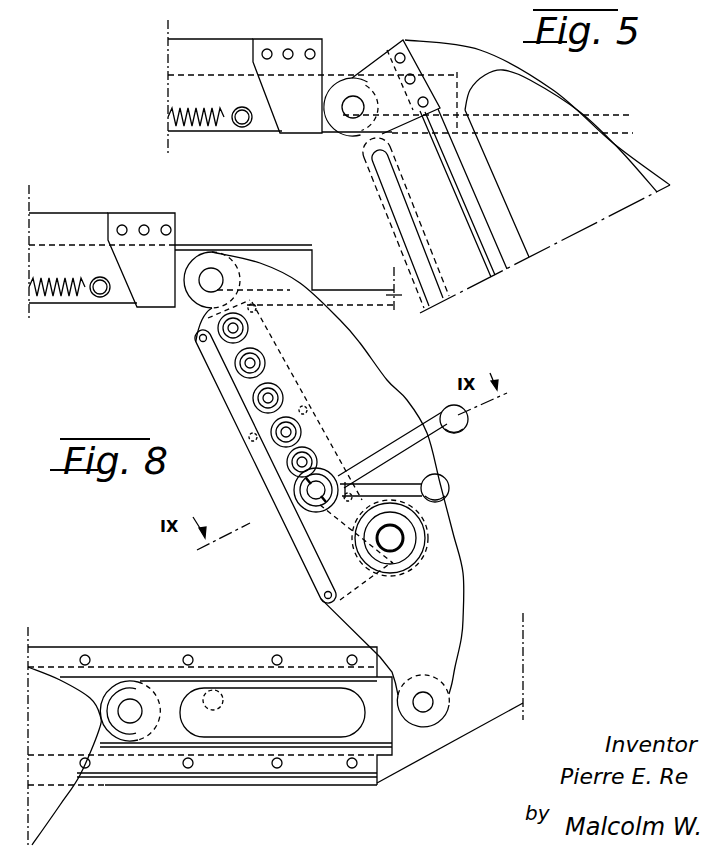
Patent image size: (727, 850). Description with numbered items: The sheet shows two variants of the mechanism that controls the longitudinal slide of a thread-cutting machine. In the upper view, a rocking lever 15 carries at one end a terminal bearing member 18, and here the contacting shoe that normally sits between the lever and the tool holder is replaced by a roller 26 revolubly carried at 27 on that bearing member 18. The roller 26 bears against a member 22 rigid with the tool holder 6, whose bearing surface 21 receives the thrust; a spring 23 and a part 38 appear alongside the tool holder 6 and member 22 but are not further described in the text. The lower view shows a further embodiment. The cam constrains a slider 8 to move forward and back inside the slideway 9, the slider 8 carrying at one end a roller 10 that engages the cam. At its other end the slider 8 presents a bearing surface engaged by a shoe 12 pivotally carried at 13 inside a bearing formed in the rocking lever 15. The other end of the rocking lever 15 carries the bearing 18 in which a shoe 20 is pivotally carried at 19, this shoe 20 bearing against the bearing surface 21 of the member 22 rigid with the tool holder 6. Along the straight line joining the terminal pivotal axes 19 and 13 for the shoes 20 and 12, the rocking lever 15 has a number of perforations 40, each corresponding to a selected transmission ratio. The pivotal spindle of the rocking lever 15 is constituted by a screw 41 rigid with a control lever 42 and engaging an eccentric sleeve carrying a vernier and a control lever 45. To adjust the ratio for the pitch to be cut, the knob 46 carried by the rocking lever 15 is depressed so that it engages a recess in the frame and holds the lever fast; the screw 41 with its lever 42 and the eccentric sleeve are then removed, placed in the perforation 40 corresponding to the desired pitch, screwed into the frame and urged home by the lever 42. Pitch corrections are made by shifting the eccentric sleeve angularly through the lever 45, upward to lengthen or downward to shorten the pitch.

In FIG. 5, the tool holder 6 is at (223, 53).
In FIG. 8, the tool holder 6 is at (45, 221).
In FIG. 8, the slider 8 is at (167, 730).
In FIG. 8, the slideway 9 is at (158, 657).
In FIG. 8, the roller 10 is at (113, 737).
In FIG. 8, the shoe 12 is at (397, 722).
In FIG. 8, the pivot 13 is at (434, 703).
In FIG. 5, the rocking lever 15 is at (560, 91).
In FIG. 8, the rocking lever 15 is at (378, 381).
In FIG. 5, the terminal bearing member 18 is at (408, 42).
In FIG. 8, the pivot 19 is at (213, 277).
In FIG. 8, the shoe 20 is at (183, 264).
In FIG. 5, the bearing surface 21 is at (322, 59).
In FIG. 5, the member 22 is at (281, 47).
In FIG. 8, the member 22 is at (130, 221).
In FIG. 5, the spring 23 is at (222, 128).
In FIG. 8, the spring 23 is at (68, 302).
In FIG. 5, the roller 26 is at (340, 136).
In FIG. 5, the pivot 27 is at (356, 113).
In FIG. 5, the guide 38 is at (182, 0).
In FIG. 8, the perforations 40 is at (240, 362).
In FIG. 8, the screw 41 is at (318, 506).
In FIG. 8, the control lever 42 is at (462, 426).
In FIG. 8, the control lever 45 is at (440, 482).
In FIG. 8, the knob 46 is at (396, 538).